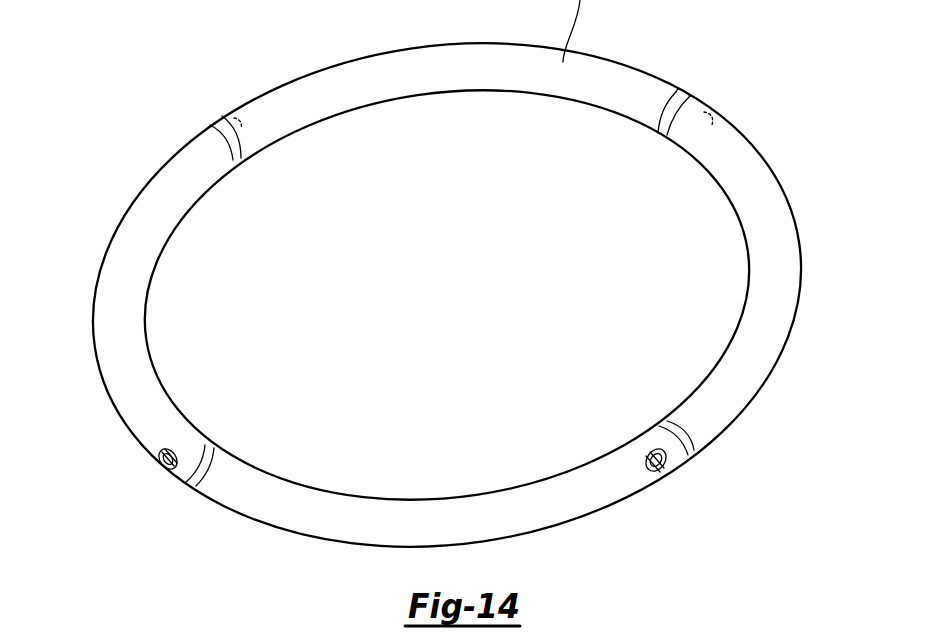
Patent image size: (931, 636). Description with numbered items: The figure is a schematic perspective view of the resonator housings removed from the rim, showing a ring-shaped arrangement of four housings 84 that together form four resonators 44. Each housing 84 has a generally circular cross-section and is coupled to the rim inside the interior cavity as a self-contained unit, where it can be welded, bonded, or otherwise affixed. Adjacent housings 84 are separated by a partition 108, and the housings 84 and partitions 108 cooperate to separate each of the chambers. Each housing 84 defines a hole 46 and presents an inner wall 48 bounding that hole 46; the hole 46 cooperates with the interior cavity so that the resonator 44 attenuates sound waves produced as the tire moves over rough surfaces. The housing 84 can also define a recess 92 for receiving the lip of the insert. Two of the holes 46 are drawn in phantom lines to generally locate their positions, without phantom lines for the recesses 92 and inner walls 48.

The resonator 44 is at (225, 94).
The housing 84 is at (125, 252).
The partition 108 is at (220, 118).
The hole 46 is at (252, 128).
The inner wall 48 is at (165, 470).
The recess 92 is at (160, 463).